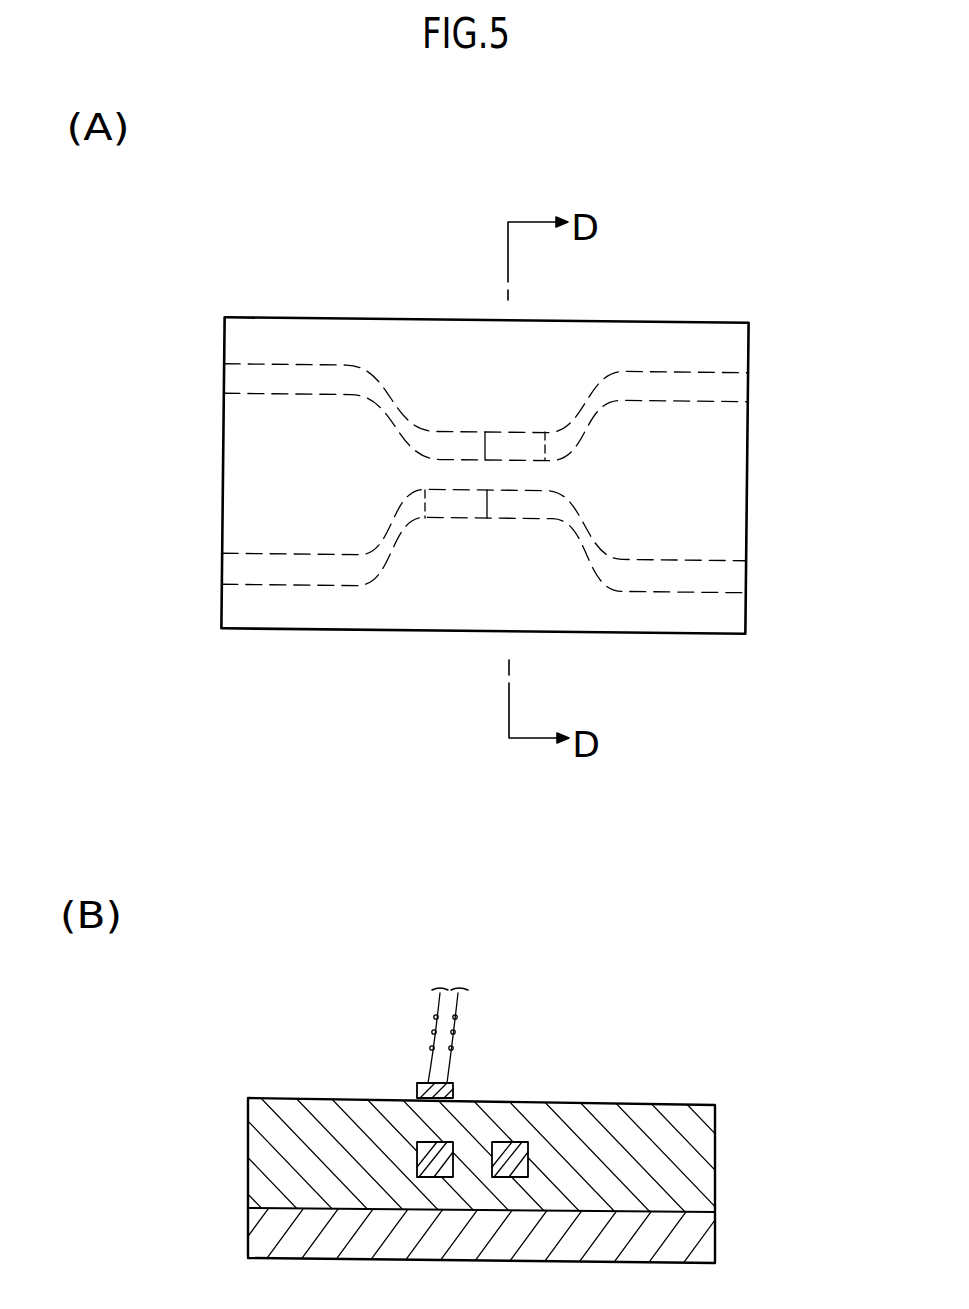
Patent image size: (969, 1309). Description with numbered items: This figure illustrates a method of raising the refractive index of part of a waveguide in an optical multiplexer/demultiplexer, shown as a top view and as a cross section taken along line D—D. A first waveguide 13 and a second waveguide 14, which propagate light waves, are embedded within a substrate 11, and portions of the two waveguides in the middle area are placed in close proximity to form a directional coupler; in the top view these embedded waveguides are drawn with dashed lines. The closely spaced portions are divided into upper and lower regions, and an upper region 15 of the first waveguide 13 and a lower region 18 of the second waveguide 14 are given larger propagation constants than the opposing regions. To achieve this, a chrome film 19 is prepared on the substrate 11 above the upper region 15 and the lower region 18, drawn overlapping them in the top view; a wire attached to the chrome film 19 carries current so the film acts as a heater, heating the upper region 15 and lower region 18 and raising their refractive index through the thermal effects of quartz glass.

The substrate 11 is at (822, 1140).
The first waveguide 13 is at (447, 1152).
The second waveguide 14 is at (517, 1148).
The upper region 15 is at (435, 1159).
The lower region 18 is at (485, 475).
The chrome film 19 is at (417, 1083).